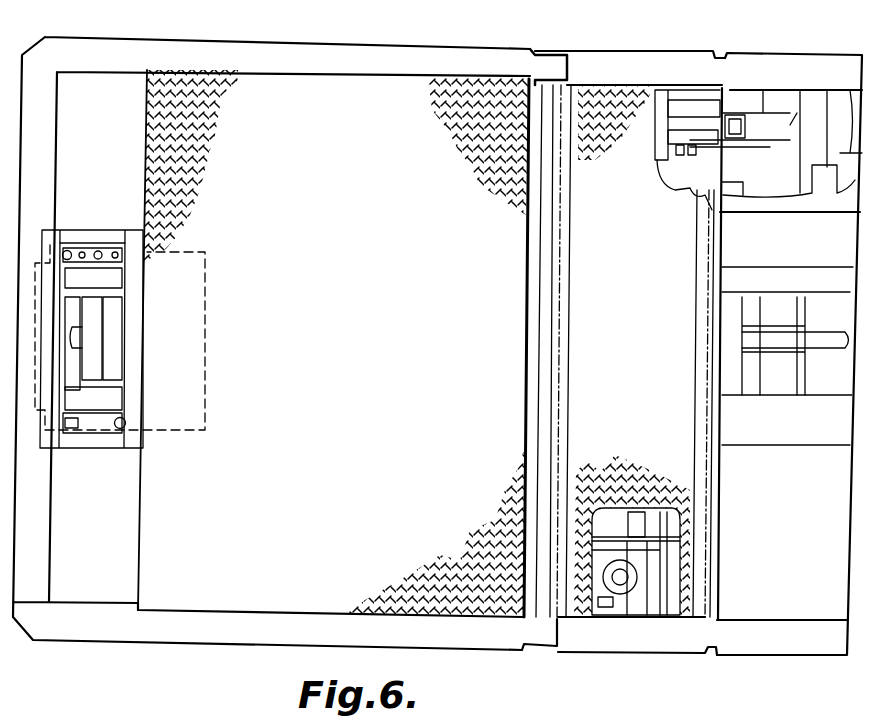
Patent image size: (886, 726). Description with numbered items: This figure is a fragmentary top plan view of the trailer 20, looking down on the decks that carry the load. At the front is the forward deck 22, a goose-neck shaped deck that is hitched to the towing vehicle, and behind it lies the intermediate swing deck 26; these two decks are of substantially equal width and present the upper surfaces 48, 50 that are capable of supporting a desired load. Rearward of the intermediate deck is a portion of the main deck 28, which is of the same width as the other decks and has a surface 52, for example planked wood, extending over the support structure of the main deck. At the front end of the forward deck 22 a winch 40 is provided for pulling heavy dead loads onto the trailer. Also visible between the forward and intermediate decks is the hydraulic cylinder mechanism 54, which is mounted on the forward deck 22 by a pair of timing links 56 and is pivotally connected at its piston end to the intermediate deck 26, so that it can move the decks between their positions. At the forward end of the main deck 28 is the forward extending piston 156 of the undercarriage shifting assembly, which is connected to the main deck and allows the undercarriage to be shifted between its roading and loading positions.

The trailer 20 is at (543, 663).
The forward deck 22 is at (198, 632).
The intermediate swing deck 26 is at (622, 643).
The main deck 28 is at (784, 374).
The winch 40 is at (143, 356).
The upper surface of forward deck 48 is at (438, 88).
The upper surface of intermediate deck 50 is at (585, 332).
The surface of main deck 52 is at (705, 432).
The hydraulic cylinder mechanism 54 is at (597, 584).
The timing links 56 is at (663, 87).
The forward extending piston 156 is at (835, 340).